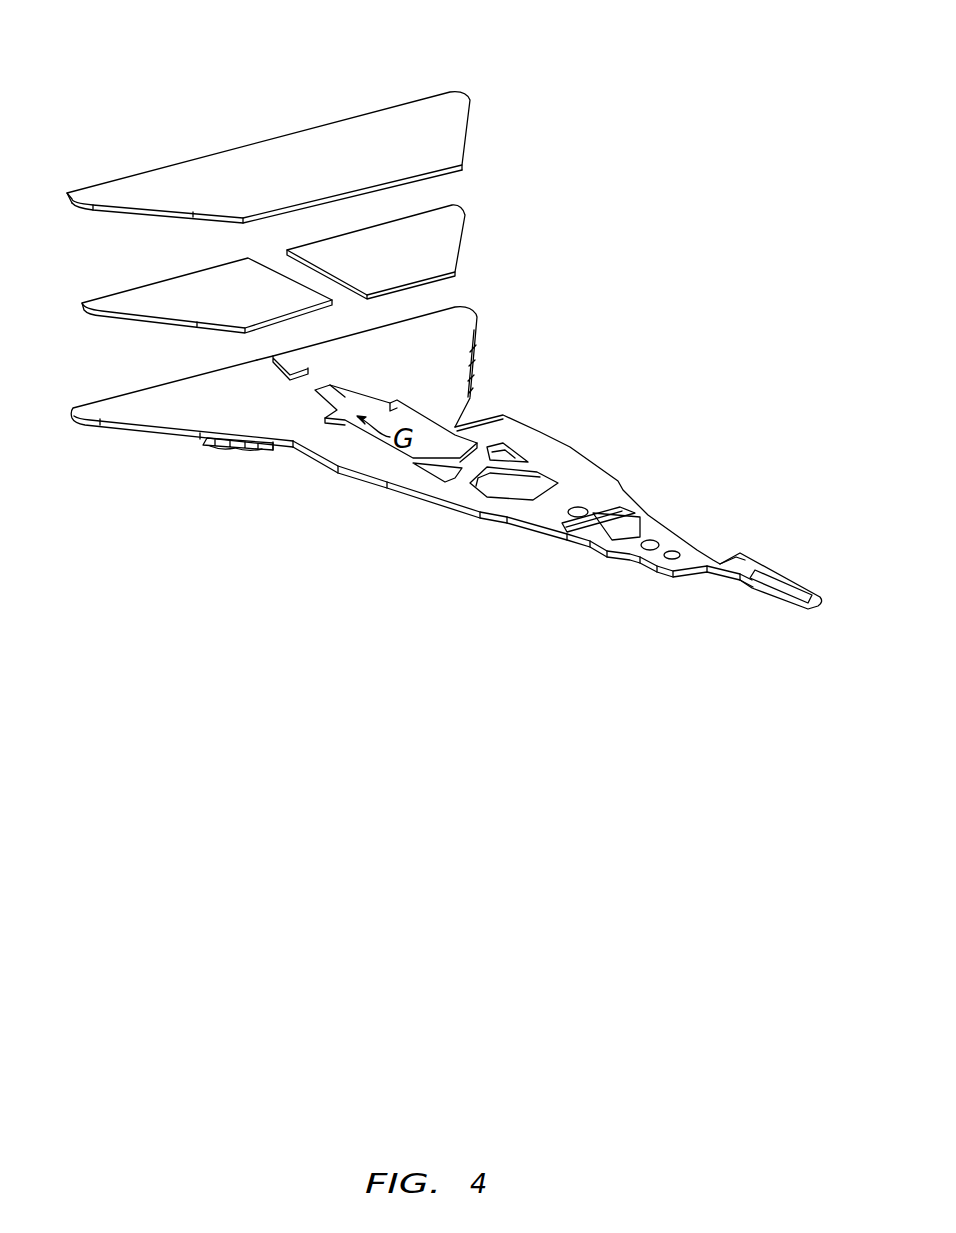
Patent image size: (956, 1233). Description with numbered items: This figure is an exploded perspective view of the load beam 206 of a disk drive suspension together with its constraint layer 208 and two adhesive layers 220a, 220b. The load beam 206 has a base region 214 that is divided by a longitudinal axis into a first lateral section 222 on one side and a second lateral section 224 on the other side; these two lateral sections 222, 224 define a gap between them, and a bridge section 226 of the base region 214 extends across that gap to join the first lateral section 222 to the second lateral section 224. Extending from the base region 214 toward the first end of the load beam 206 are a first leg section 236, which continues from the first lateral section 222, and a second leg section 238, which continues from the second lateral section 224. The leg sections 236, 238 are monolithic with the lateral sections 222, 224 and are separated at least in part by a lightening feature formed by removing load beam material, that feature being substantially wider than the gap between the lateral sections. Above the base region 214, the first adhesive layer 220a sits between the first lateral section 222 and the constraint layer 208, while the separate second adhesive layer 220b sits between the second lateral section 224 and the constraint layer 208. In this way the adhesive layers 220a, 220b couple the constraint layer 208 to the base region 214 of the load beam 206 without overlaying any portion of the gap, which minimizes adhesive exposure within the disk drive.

The load beam 206 is at (557, 482).
The constraint layer 208 is at (382, 107).
The base region 214 is at (227, 467).
The first adhesive layer 220a is at (147, 320).
The second adhesive layer 220b is at (462, 239).
The first lateral section 222 is at (182, 469).
The second lateral section 224 is at (419, 413).
The bridge section 226 is at (307, 385).
The first leg section 236 is at (440, 515).
The second leg section 238 is at (525, 427).